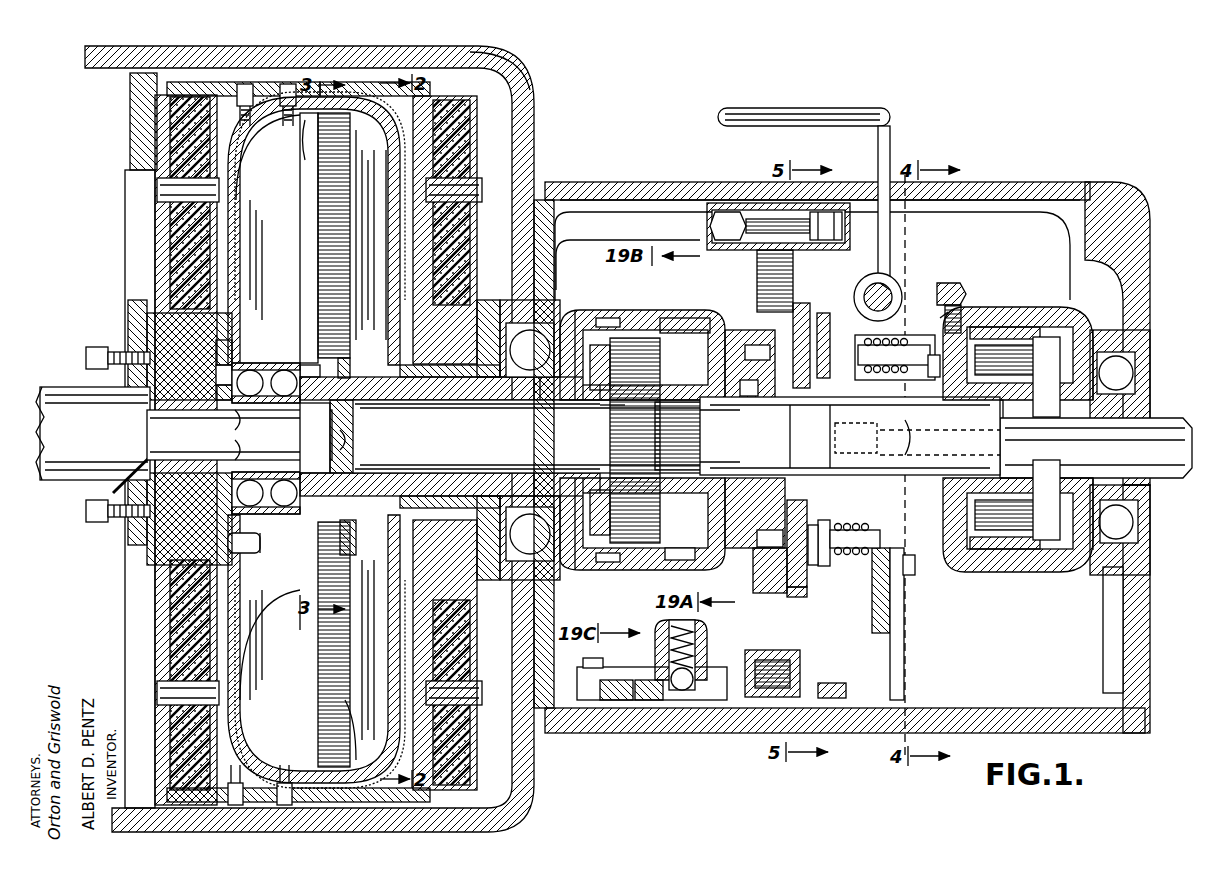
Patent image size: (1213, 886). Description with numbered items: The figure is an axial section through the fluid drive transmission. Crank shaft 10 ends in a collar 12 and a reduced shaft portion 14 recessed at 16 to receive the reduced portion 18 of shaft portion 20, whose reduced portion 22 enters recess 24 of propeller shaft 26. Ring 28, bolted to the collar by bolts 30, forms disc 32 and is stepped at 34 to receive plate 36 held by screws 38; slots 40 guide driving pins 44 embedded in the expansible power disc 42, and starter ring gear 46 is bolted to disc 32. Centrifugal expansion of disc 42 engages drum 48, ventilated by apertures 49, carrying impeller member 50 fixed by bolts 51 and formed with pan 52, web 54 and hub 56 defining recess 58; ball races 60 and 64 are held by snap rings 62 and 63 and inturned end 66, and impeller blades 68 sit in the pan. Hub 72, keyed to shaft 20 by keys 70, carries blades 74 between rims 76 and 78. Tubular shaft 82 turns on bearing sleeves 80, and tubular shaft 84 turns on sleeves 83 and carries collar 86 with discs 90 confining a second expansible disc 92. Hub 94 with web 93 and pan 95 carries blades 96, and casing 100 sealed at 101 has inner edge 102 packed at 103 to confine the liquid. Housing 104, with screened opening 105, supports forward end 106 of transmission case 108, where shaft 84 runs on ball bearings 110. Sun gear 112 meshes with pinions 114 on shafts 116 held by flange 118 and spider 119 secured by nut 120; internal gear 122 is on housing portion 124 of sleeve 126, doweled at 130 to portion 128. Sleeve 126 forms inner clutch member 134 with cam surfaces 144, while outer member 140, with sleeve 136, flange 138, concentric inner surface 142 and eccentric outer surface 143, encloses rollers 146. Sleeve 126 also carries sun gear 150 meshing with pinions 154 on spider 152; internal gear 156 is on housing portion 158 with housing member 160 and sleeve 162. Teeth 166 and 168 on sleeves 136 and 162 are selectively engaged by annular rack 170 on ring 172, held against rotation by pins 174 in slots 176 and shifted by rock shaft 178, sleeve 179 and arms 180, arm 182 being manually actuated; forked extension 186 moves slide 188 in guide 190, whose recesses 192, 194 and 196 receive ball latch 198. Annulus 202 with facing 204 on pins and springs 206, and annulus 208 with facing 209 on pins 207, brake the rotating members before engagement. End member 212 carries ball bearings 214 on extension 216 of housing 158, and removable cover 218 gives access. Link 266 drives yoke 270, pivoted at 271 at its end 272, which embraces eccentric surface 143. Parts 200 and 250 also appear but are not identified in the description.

The crank shaft 10 is at (48, 478).
The flange or collar 12 is at (132, 392).
The shaft portion of reduced diameter 14 is at (124, 472).
The axial recess 16 is at (245, 438).
The reduced cylindrical portion 18 is at (260, 450).
The shaft portion 20 is at (678, 436).
The reduced diameter portion 22 is at (850, 436).
The axial recess 24 is at (735, 421).
The propeller shaft 26 is at (1168, 420).
The annular ring 28 is at (165, 393).
The bolts 30 is at (115, 358).
The disc-like wall 32 is at (158, 317).
The stepped recess 34 is at (258, 345).
The annular plate 36 is at (258, 313).
The screws 38 is at (258, 328).
The radially extending slots 40 is at (165, 190).
The power disc 42 is at (165, 255).
The driving pins 44 is at (160, 210).
The starter ring gear 46 is at (140, 105).
The drum-like sleeve 48 is at (215, 84).
The apertures 49 is at (360, 80).
The fluid impeller member 50 is at (244, 170).
The bolts 51 is at (255, 88).
The annular recess or pan 52 is at (248, 220).
The web 54 is at (280, 563).
The hub 56 is at (244, 543).
The recessed portion 58 is at (292, 598).
The ball race 60 is at (275, 478).
The snap ring or collar 62 is at (305, 470).
The snap ring 63 is at (259, 545).
The cooperating ball race 64 is at (292, 282).
The inturned end 66 is at (345, 360).
The impeller blades 68 is at (305, 180).
The keys 70 is at (368, 405).
The hub 72 is at (345, 540).
The radially extending blades 74 is at (345, 200).
The annular rim 76 is at (356, 275).
The annular rim 78 is at (325, 728).
The bearing sleeves 80 is at (462, 402).
The tubular shaft 82 is at (505, 400).
The bearing sleeves 83 is at (545, 402).
The tubular shaft 84 is at (520, 402).
The collar 86 is at (445, 498).
The annular discs 90 is at (478, 246).
The expansible annular disc 92 is at (478, 115).
The web 93 is at (352, 370).
The hub 94 is at (360, 441).
The annular pan 95 is at (392, 252).
The blades 96 is at (369, 445).
The casing 100 is at (407, 112).
The sealed peripheral edge 101 is at (305, 152).
The inner circular edge 102 is at (320, 618).
The packing member 103 is at (405, 412).
The housing 104 is at (538, 130).
The screened opening 105 is at (505, 54).
The forward end 106 is at (560, 248).
The transmission case 108 is at (590, 732).
The ball bearings 110 is at (568, 312).
The sun gear 112 is at (628, 438).
The planetary pinions 114 is at (648, 338).
The shafts 116 is at (618, 540).
The flange 118 is at (592, 550).
The spider 119 is at (700, 548).
The threaded collar or nut 120 is at (672, 438).
The internal gear 122 is at (625, 343).
The cylindrical housing portion 124 is at (690, 312).
The hollow shaft or sleeve 126 is at (808, 436).
The housing portion 128 is at (578, 572).
The dowels 130 is at (605, 318).
The inner clutch member 134 is at (748, 380).
The sleeve portion 136 is at (815, 436).
The flange 138 is at (805, 305).
The outer clutch member 140 is at (740, 330).
The inner surface 142 is at (760, 345).
The outer surface 143 is at (758, 590).
The cam surfaces 144 is at (737, 455).
The rollers 146 is at (772, 530).
The planetary sun gear 150 is at (1030, 386).
The spider 152 is at (1030, 492).
The planetary pinions 154 is at (1020, 330).
The internal gear 156 is at (1010, 307).
The supporting housing portion 158 is at (1068, 318).
The annular housing member 160 is at (962, 288).
The sleeve portion 162 is at (933, 436).
The teeth 166 is at (858, 366).
The teeth 168 is at (908, 575).
The annular rack 170 is at (922, 366).
The ring 172 is at (892, 605).
The pin 174 is at (852, 438).
The slot 176 is at (940, 446).
The rock shaft 178 is at (865, 276).
The sleeve 179 is at (900, 275).
The arms 180 is at (840, 305).
The arm 182 is at (895, 135).
The extension 186 is at (922, 662).
The slide 188 is at (828, 676).
The guide 190 is at (745, 700).
The recess 192 is at (630, 678).
The recess 194 is at (688, 690).
The recess 196 is at (730, 668).
The spring pressed ball latch 198 is at (672, 690).
The plunger 200 is at (828, 565).
The annulus 202 is at (815, 565).
The clutch facing 204 is at (800, 597).
The pins and springs 206 is at (842, 556).
The slidable pins 207 is at (860, 346).
The annulus 208 is at (945, 322).
The clutch facing 209 is at (926, 302).
The end member 212 is at (1148, 648).
The ball bearings 214 is at (1140, 580).
The cylindrical extension 216 is at (1150, 395).
The removable cover 218 is at (1030, 182).
The handle 250 is at (800, 96).
The link 266 is at (790, 697).
The yoke 270 is at (757, 262).
The pivot 271 is at (805, 205).
The yoke end 272 is at (760, 200).